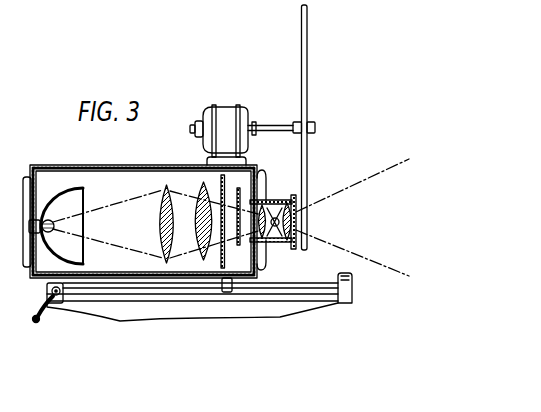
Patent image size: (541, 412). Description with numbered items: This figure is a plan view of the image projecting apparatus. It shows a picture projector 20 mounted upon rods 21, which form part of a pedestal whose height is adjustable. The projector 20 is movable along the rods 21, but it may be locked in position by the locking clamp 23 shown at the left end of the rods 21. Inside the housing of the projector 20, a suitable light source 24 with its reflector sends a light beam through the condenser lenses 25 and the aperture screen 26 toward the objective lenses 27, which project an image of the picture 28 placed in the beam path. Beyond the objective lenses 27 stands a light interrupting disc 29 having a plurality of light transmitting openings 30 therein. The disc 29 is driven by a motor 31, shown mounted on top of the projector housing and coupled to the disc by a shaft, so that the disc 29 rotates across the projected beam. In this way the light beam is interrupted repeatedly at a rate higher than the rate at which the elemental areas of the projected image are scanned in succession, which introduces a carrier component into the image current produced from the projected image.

The picture projector 20 is at (48, 168).
The rods 21 is at (107, 294).
The locking clamp 23 is at (46, 320).
The light source 24 is at (51, 231).
The condenser lenses 25 is at (199, 196).
The aperture screen 26 is at (225, 259).
The objective lenses 27 is at (277, 244).
The picture 28 is at (239, 196).
The light interrupting disc 29 is at (308, 87).
The light transmitting openings 30 is at (309, 218).
The motor 31 is at (228, 107).